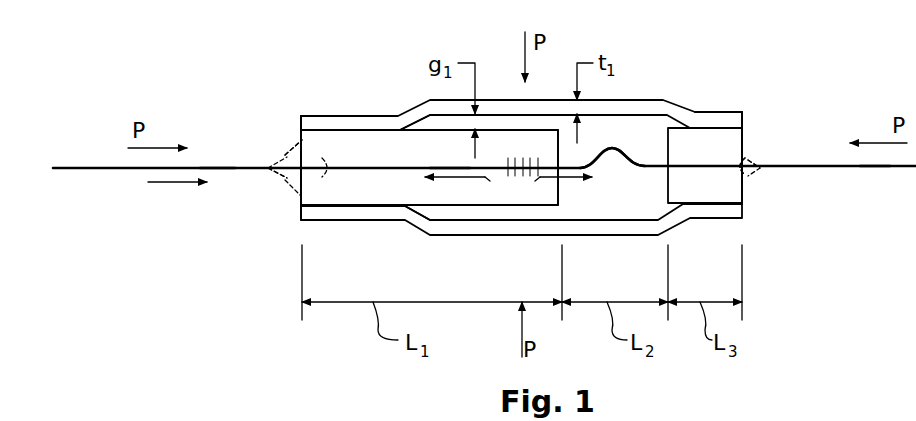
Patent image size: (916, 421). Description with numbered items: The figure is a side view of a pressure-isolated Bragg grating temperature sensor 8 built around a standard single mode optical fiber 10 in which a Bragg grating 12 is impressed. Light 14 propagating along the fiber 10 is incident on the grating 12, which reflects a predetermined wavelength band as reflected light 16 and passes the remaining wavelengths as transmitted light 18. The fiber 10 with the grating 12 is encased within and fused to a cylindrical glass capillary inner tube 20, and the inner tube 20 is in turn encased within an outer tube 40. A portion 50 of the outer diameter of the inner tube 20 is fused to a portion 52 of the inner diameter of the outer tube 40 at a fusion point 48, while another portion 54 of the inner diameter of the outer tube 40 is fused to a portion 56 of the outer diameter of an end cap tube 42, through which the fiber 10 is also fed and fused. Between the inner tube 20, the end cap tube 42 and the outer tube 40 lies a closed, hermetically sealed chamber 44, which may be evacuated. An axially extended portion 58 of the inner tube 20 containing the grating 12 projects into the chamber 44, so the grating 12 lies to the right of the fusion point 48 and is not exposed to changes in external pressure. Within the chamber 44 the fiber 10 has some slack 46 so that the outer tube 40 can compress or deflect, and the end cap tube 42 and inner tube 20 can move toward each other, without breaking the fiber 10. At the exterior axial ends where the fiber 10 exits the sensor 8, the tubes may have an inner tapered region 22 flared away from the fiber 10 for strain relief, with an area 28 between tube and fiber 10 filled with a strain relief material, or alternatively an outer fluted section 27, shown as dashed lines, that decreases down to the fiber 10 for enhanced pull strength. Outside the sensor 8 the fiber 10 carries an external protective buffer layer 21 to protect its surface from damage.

The pressure-isolated Bragg grating temperature sensor 8 is at (292, 97).
The optical waveguide 10 is at (245, 172).
The Bragg grating 12 is at (512, 158).
The light 14 is at (165, 182).
The reflected light line 16 is at (448, 177).
The transmitted light line 18 is at (543, 185).
The inner tube 20 is at (296, 124).
The protective buffer layer 21 is at (222, 172).
The inner tapered region 22 is at (312, 157).
The outer tapered section 27 is at (293, 156).
The area between tube and fiber 28 is at (285, 185).
The outer tube 40 is at (613, 104).
The end cap tube 42 is at (743, 113).
The chamber 44 is at (632, 204).
The slack 46 is at (620, 150).
The fusion point 48 is at (400, 130).
The portion of outer diameter of inner tube 50 is at (338, 197).
The portion of inner diameter of outer tube 52 is at (352, 125).
The another portion of inner diameter of outer tube 54 is at (727, 140).
The portion of outer diameter of end cap tube 56 is at (710, 193).
The axially extended portion of inner tube 58 is at (498, 185).